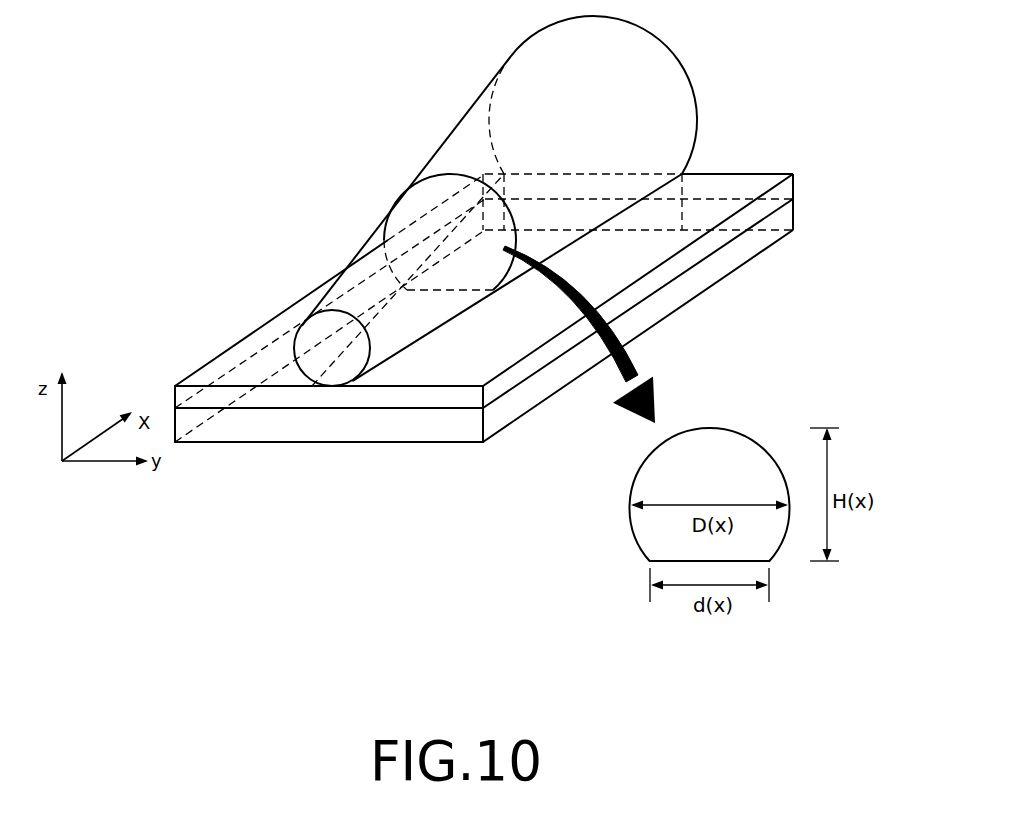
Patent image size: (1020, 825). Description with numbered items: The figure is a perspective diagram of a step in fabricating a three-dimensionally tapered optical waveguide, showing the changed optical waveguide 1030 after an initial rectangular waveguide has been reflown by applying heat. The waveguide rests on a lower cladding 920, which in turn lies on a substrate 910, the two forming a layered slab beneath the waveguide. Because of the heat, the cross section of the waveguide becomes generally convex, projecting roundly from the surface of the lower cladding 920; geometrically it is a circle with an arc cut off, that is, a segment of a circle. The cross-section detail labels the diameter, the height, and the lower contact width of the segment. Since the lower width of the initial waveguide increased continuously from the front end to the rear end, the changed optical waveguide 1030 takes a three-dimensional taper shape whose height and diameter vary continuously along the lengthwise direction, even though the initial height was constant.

The changed optical waveguide 1030 is at (654, 52).
The lower cladding 920 is at (787, 187).
The substrate 910 is at (787, 220).